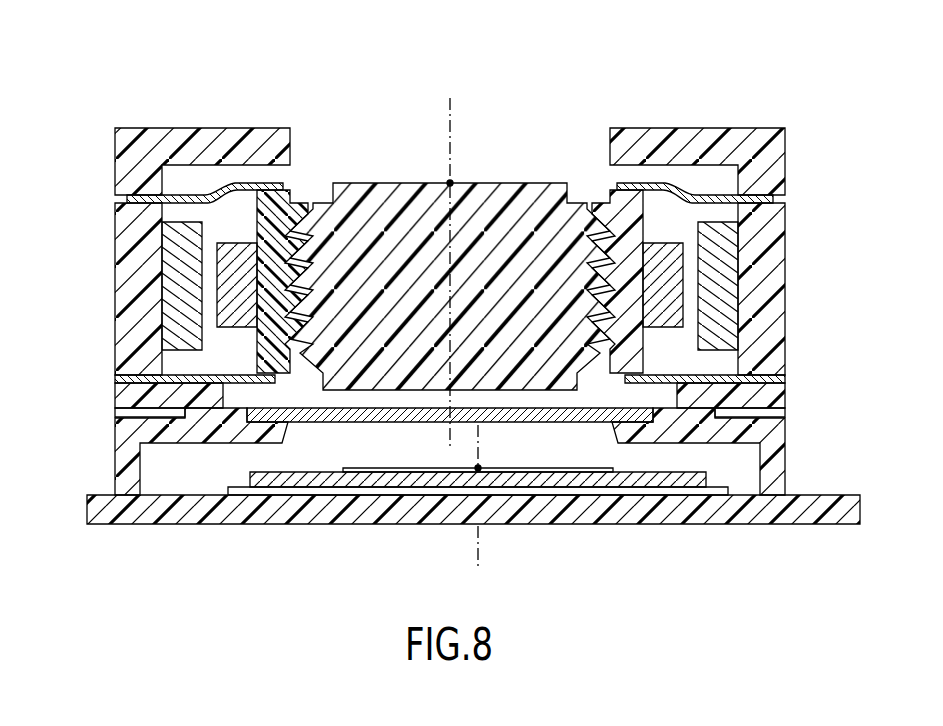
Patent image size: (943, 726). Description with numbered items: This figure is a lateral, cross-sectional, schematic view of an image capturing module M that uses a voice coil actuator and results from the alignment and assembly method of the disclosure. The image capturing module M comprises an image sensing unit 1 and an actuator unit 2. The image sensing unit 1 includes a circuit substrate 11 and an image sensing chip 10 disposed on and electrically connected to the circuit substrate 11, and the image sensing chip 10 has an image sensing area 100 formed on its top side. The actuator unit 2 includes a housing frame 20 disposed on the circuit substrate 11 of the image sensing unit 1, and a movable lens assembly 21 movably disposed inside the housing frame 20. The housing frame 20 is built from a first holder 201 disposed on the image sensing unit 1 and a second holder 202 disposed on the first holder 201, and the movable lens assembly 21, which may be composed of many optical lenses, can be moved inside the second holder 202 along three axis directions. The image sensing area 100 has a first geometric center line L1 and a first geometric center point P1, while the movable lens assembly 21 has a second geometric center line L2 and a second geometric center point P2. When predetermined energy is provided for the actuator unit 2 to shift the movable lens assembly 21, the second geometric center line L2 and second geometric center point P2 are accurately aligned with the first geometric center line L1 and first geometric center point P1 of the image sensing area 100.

The image capturing module M is at (145, 40).
The image sensing unit 1 is at (473, 517).
The image sensing chip 10 is at (372, 478).
The image sensing area 100 is at (417, 470).
The circuit substrate 11 is at (272, 516).
The actuator unit 2 is at (667, 124).
The housing frame 20 is at (395, 422).
The first holder 201 is at (128, 443).
The second holder 202 is at (128, 350).
The movable lens assembly 21 is at (548, 200).
The first geometric center point P1 is at (486, 466).
The second geometric center point P2 is at (455, 181).
The first geometric center line L1 is at (485, 552).
The second geometric center line L2 is at (444, 157).